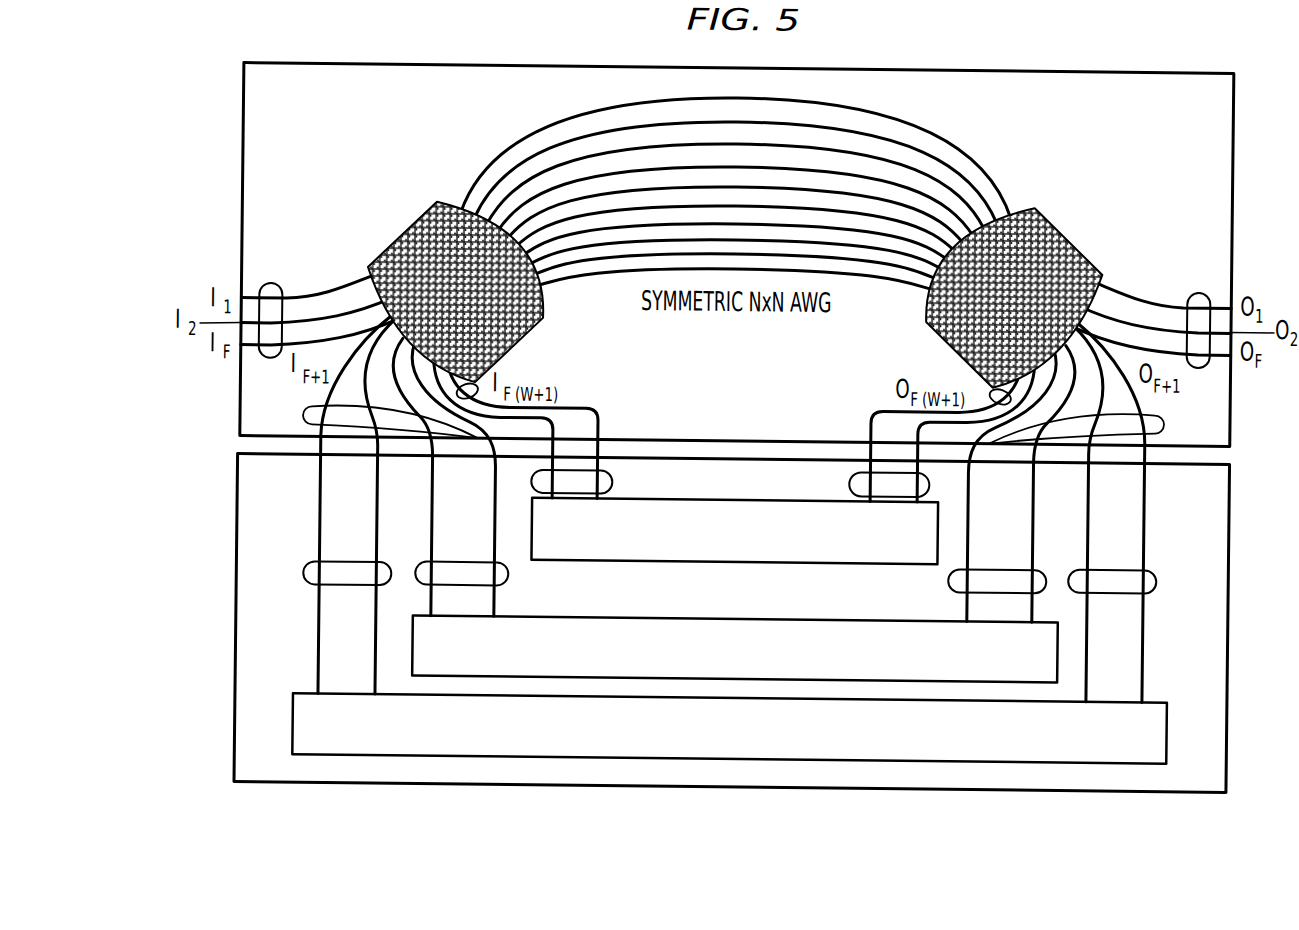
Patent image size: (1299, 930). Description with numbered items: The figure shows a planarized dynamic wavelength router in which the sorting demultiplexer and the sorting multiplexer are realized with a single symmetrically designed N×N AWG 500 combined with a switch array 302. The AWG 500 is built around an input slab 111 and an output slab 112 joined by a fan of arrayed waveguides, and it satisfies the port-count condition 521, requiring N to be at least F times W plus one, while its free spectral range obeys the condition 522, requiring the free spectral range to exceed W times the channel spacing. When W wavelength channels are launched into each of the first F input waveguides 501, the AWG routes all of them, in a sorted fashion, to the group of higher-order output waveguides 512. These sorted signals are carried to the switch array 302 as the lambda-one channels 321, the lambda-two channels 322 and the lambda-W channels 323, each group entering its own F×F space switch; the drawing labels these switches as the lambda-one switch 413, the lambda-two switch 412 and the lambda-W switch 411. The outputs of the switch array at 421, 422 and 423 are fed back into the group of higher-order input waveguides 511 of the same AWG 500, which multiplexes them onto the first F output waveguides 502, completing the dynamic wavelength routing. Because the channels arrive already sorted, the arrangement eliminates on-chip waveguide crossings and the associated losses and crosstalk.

The symmetrically designed AWG 500 is at (960, 62).
The input slab 111 is at (397, 240).
The output slab 112 is at (1070, 240).
The input waveguides I1 to IF 501 is at (270, 288).
The output waveguides O1 to OF 502 is at (1197, 288).
The waveguides IF+1 to IF(W+1) 511 is at (306, 411).
The outputs OF+1 to OF(W+1) 512 is at (1161, 411).
The condition N≧F(W+1) 521 is at (800, 330).
The free spectral range condition fsr Wδλ 522 is at (792, 357).
The switch array 302 is at (237, 574).
The FxF lambda-W switch 411 is at (618, 563).
The FxF lambda-2 switch 412 is at (668, 619).
The FxF lambda-1 switch 413 is at (512, 760).
The switch array outputs for λW channels 421 is at (614, 485).
The switch array outputs for λ2 channels 422 is at (457, 565).
The switch array outputs for λ1 channels 423 is at (342, 592).
The sorted λ1 channels 321 is at (1114, 592).
The sorted λ2 channels 322 is at (1005, 567).
The sorted λW channels 323 is at (849, 485).